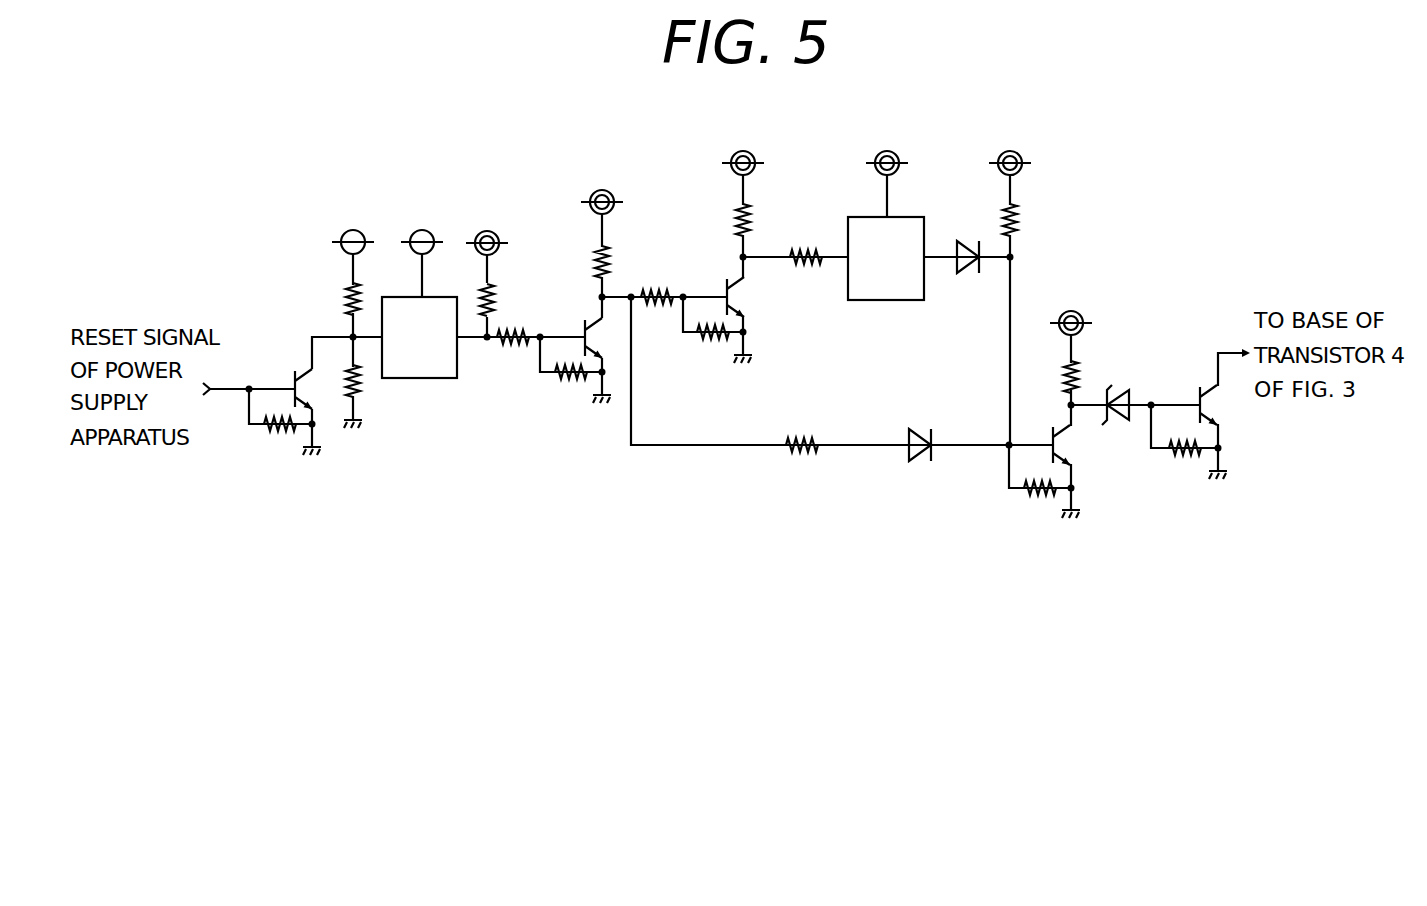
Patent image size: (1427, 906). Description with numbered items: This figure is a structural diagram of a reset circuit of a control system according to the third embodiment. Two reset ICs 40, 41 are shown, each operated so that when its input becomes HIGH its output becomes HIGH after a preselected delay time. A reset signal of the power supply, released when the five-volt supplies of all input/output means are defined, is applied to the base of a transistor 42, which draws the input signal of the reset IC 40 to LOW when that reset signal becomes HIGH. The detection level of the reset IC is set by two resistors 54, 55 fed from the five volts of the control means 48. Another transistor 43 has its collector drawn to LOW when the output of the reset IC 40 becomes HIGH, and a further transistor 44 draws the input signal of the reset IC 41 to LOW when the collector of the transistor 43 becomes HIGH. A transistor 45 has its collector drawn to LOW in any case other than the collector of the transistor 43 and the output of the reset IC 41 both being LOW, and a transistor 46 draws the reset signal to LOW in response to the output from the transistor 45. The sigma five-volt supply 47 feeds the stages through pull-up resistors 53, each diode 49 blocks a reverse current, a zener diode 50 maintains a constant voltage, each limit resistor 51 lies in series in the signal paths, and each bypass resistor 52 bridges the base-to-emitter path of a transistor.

The reset IC 40 is at (440, 386).
The reset IC 41 is at (898, 212).
The transistor 42 is at (318, 381).
The transistor 43 is at (601, 333).
The transistor 44 is at (745, 296).
The transistor 45 is at (1078, 436).
The transistor 46 is at (1222, 417).
The Σ5V 47 is at (498, 232).
The 5V of control means 48 is at (365, 232).
The diode 49 is at (957, 234).
The zener diode 50 is at (1135, 394).
The limit resistor 51 is at (522, 323).
The bypass resistor 52 is at (558, 396).
The pull-up resistor 53 is at (614, 253).
The resistor 54 is at (347, 291).
The resistor 55 is at (360, 405).